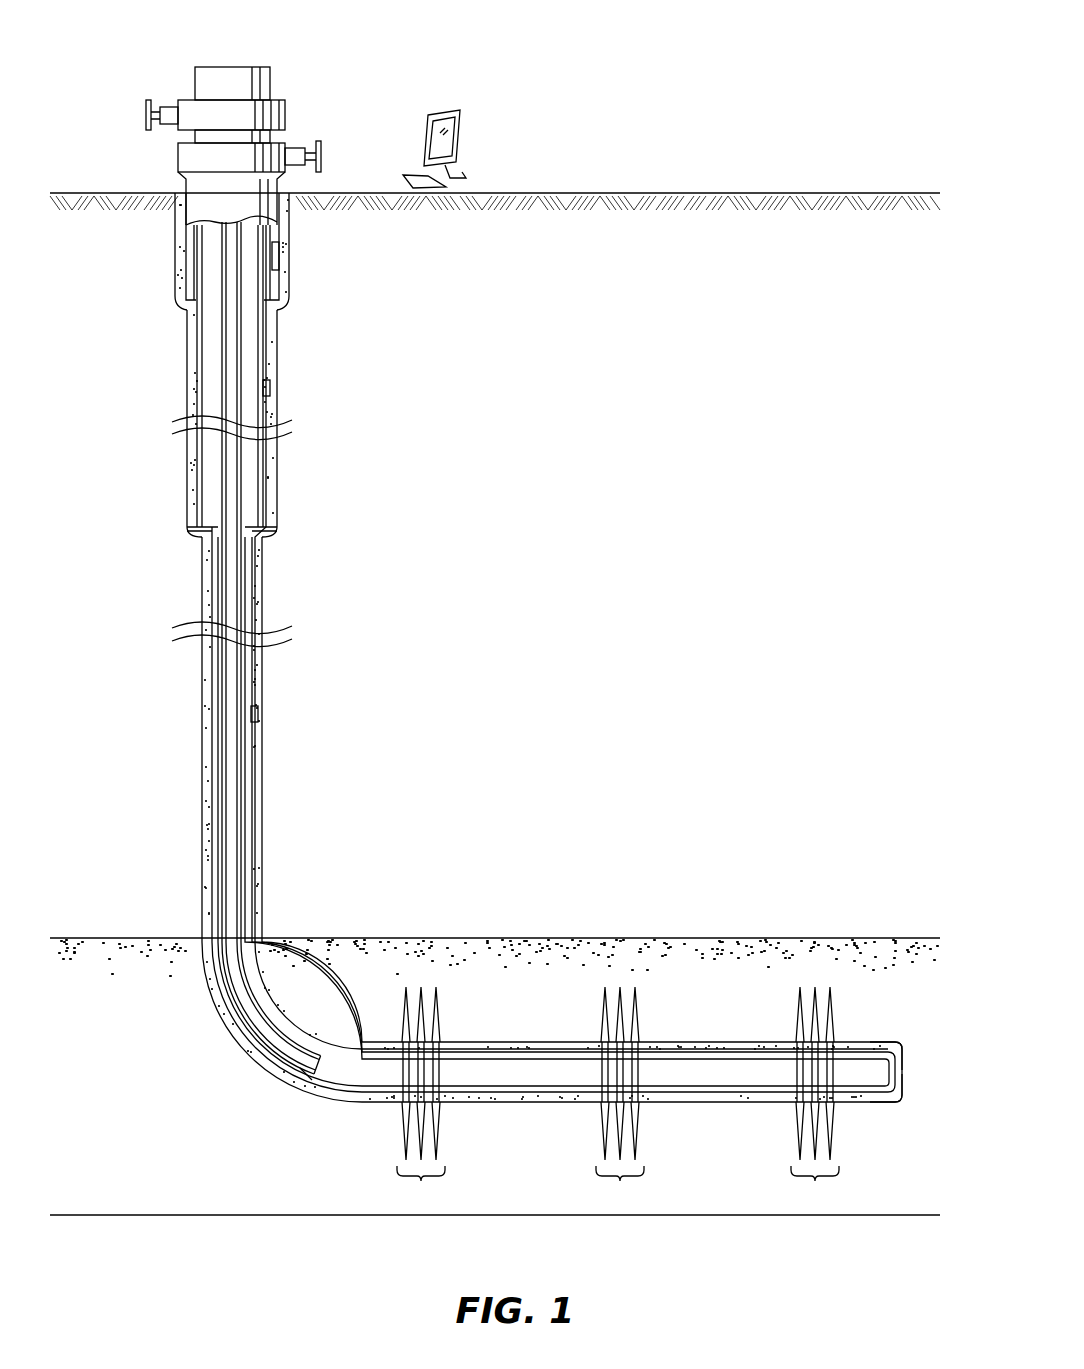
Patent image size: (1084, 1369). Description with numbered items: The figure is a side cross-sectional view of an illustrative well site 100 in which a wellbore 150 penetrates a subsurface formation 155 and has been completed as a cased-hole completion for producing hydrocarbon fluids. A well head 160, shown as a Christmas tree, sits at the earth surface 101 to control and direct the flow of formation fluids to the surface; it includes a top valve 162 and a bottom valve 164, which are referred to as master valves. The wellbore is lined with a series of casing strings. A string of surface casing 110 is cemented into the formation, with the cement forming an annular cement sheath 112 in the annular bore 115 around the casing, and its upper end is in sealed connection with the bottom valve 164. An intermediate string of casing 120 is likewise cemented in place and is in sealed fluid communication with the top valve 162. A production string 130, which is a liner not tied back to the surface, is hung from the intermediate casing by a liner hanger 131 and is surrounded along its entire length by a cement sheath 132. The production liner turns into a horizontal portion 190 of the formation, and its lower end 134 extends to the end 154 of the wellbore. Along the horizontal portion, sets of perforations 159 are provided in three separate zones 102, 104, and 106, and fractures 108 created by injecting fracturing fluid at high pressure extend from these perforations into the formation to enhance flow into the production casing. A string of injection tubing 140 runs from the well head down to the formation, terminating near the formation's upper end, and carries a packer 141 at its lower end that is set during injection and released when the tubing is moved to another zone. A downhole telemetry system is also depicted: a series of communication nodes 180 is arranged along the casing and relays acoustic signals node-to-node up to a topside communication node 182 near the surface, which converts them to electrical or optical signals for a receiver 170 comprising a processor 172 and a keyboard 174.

The well site 100 is at (602, 66).
The earth surface 101 is at (657, 193).
The first zone 102 is at (421, 1187).
The second zone 104 is at (619, 1187).
The third zone 106 is at (815, 1187).
The fractures 108 is at (636, 1020).
The surface casing 110 is at (284, 234).
The cement sheath 112 is at (282, 296).
The annular bore 115 is at (273, 358).
The intermediate string of casing 120 is at (276, 331).
The production string 130 is at (258, 768).
The liner hanger 131 is at (257, 514).
The cement sheath 132 is at (265, 586).
The lower end 134 is at (872, 1043).
The injection tubing 140 is at (240, 443).
The packer 141 is at (305, 1070).
The wellbore 150 is at (524, 504).
The end of the wellbore 154 is at (886, 1103).
The subsurface formation 155 is at (126, 1099).
The perforations 159 is at (403, 1086).
The well head 160 is at (218, 115).
The top valve 162 is at (287, 113).
The bottom valve 164 is at (178, 158).
The receiver 170 is at (442, 129).
The processor 172 is at (462, 150).
The keyboard 174 is at (416, 173).
The communication nodes 180 is at (270, 392).
The topside communication node 182 is at (285, 264).
The horizontal portion 190 is at (852, 897).